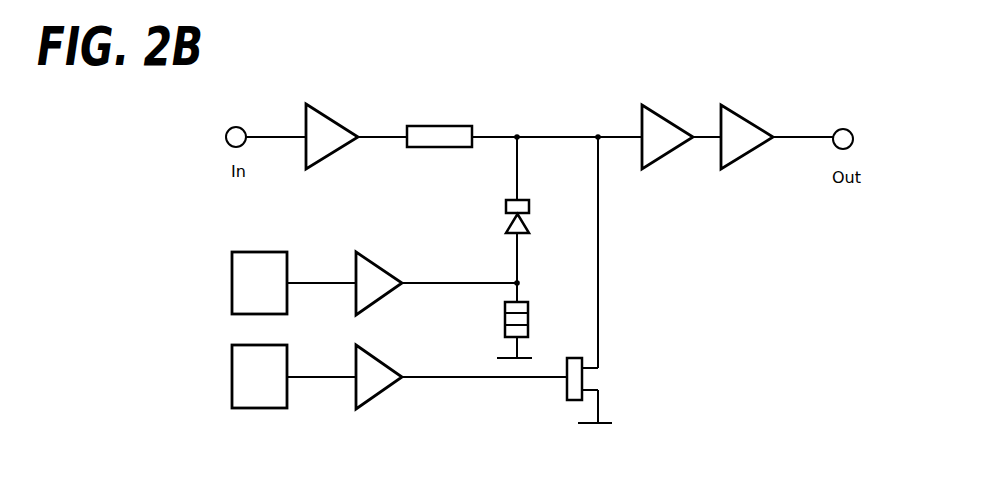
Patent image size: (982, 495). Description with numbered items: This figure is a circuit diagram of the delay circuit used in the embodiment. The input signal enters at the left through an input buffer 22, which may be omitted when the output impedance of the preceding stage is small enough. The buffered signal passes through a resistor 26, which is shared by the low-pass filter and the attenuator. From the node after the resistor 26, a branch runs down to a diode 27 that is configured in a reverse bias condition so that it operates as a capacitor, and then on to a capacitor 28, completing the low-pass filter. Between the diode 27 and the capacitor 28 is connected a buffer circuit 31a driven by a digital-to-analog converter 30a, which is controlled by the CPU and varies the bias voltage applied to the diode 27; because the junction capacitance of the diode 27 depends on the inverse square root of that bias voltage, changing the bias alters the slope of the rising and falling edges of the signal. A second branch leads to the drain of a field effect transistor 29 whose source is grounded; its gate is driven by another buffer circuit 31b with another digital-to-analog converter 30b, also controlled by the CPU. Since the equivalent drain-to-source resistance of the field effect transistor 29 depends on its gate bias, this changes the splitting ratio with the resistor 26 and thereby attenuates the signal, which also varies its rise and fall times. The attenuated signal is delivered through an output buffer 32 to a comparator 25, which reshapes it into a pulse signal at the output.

The input buffer 22 is at (331, 118).
The comparator 25 is at (755, 153).
The resistor 26 is at (436, 125).
The diode 27 is at (506, 207).
The capacitor 28 is at (505, 330).
The field effect transistor 29 is at (597, 377).
The digital-to-analog converter 30a is at (262, 252).
The digital-to-analog converter 30b is at (250, 408).
The buffer circuit 31a is at (381, 259).
The buffer circuit 31b is at (376, 400).
The output buffer 32 is at (661, 116).